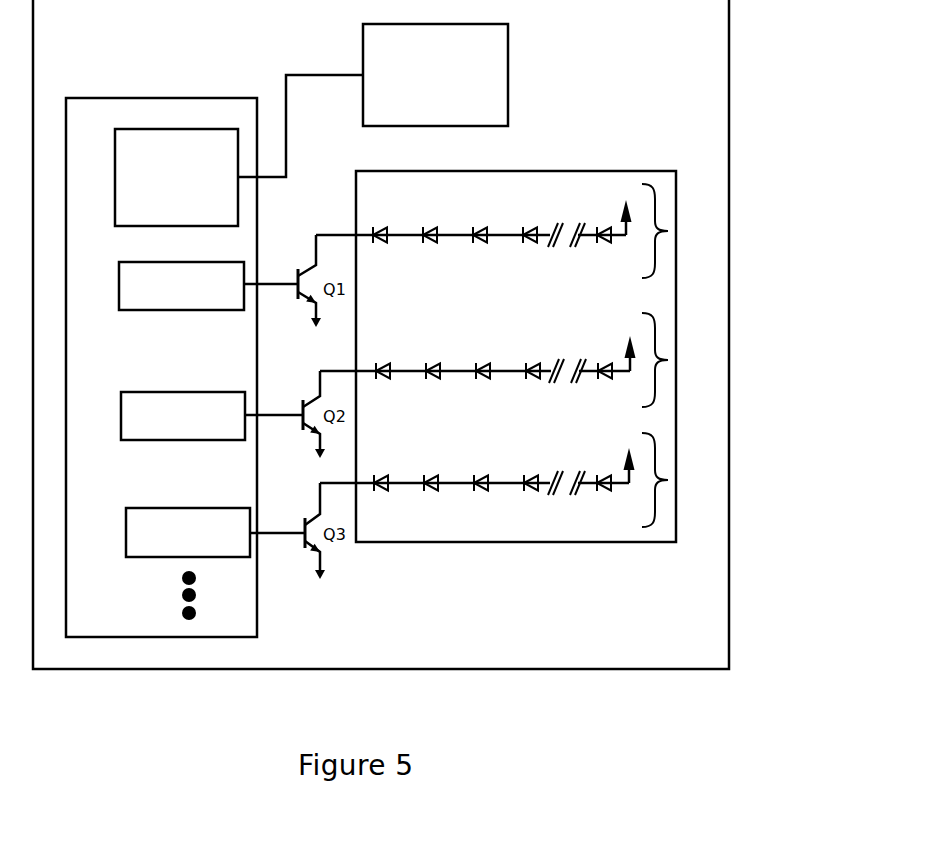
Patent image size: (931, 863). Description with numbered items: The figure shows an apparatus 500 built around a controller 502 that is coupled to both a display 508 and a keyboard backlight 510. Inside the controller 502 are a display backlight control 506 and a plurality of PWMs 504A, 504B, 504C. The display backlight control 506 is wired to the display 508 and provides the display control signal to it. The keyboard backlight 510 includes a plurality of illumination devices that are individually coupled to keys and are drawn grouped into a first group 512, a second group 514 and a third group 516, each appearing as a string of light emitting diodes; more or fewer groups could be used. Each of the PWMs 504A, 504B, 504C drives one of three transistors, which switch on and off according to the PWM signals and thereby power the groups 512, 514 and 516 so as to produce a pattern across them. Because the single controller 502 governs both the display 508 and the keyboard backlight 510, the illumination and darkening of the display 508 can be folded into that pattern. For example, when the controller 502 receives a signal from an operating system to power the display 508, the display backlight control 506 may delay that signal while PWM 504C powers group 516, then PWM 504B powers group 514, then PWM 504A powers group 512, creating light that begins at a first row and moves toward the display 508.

The apparatus 500 is at (381, 334).
The controller 502 is at (161, 367).
The PWM 504A is at (181, 286).
The PWM 504B is at (183, 416).
The PWM 504C is at (188, 532).
The display backlight control 506 is at (176, 177).
The display 508 is at (435, 75).
The keyboard backlight 510 is at (516, 356).
The first group 512 is at (668, 231).
The second group 514 is at (668, 360).
The third group 516 is at (668, 480).